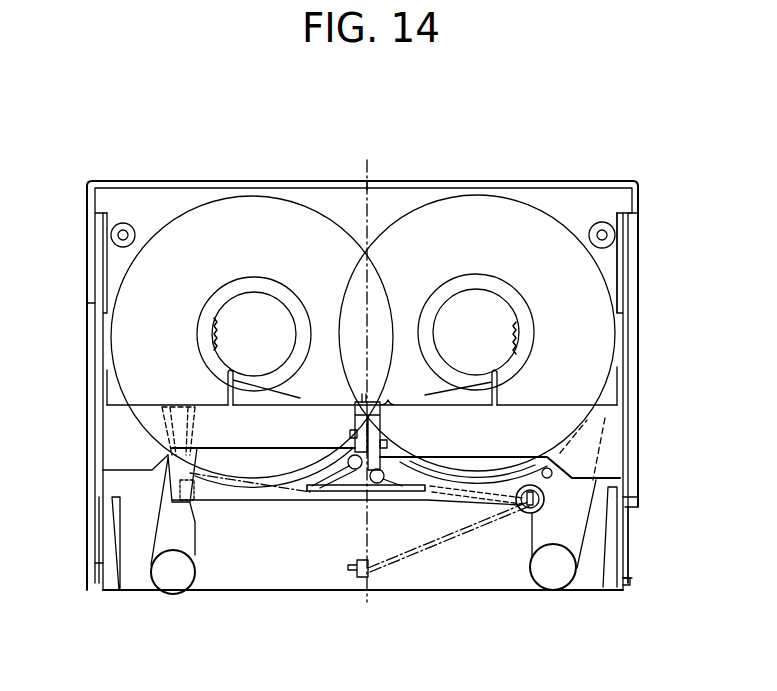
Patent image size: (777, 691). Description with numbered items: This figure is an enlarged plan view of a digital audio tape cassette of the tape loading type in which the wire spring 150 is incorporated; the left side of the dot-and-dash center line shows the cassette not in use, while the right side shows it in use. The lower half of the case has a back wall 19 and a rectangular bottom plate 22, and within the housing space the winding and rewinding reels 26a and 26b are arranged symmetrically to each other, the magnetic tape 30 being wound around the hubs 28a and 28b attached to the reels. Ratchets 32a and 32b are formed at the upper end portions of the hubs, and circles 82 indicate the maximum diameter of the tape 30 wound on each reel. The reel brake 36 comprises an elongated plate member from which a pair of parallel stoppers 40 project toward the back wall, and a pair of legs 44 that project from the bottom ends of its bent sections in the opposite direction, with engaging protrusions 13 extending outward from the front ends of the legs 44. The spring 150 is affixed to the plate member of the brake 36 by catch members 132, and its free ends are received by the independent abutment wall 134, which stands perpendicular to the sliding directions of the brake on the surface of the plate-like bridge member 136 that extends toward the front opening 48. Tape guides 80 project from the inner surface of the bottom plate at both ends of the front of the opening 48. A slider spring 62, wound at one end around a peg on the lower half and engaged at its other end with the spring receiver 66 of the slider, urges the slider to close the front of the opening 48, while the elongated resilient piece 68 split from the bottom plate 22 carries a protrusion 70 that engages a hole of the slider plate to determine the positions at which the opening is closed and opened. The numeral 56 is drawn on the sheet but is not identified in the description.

The engaging protrusion 13 is at (100, 563).
The back wall 19 is at (342, 181).
The bottom plate 22 is at (170, 205).
The winding reel 26a is at (207, 288).
The rewinding reel 26b is at (421, 290).
The hub 28a is at (293, 280).
The hub 28b is at (500, 278).
The magnetic tape 30 is at (152, 532).
The ratchet 32a is at (213, 348).
The ratchet 32b is at (522, 338).
The reel brake 36 is at (122, 441).
The stopper 40 is at (285, 388).
The leg 44 is at (103, 533).
The opening 48 is at (320, 583).
The side wall 56 is at (635, 292).
The slider spring 62 is at (487, 508).
The spring receiver 66 is at (355, 578).
The resilient piece 68 is at (193, 424).
The protrusion 70 is at (190, 505).
The tape guide 80 is at (173, 585).
The circle 82 is at (295, 202).
The catch member 132 is at (382, 418).
The independent abutment wall 134 is at (355, 490).
The bridge member 136 is at (333, 490).
The spring 150 is at (352, 418).